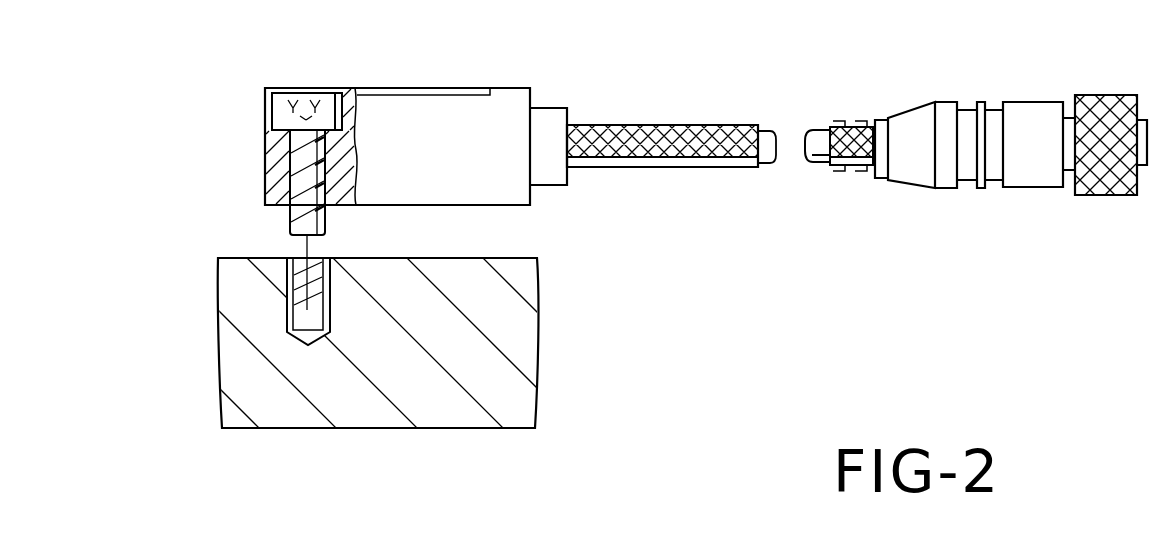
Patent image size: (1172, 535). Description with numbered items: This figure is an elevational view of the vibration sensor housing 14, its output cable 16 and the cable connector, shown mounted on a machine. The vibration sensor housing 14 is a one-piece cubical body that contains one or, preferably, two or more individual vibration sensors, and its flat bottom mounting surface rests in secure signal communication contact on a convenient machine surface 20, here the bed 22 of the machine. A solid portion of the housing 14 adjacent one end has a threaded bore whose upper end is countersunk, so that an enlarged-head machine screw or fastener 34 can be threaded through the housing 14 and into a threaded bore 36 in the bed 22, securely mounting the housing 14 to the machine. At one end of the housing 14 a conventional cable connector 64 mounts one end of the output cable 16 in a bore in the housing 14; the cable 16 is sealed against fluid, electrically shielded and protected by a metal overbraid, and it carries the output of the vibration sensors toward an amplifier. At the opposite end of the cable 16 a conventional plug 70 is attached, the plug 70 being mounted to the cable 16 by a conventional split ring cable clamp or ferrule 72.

The vibration sensor housing 14 is at (393, 116).
The output cable 16 is at (645, 128).
The machine surface 20 is at (510, 258).
The bed of a machine 22 is at (527, 362).
The machine screw 34 is at (287, 105).
The threaded bore 36 is at (305, 298).
The cable connector 64 is at (558, 178).
The plug 70 is at (1032, 189).
The split ring cable clamp 72 is at (858, 172).